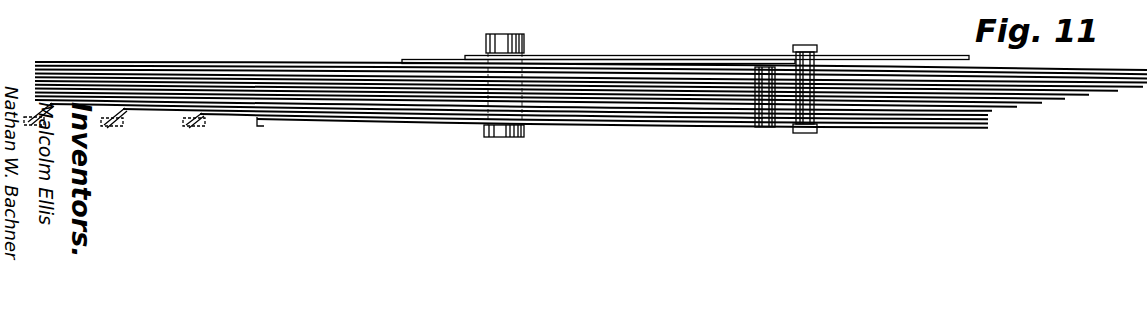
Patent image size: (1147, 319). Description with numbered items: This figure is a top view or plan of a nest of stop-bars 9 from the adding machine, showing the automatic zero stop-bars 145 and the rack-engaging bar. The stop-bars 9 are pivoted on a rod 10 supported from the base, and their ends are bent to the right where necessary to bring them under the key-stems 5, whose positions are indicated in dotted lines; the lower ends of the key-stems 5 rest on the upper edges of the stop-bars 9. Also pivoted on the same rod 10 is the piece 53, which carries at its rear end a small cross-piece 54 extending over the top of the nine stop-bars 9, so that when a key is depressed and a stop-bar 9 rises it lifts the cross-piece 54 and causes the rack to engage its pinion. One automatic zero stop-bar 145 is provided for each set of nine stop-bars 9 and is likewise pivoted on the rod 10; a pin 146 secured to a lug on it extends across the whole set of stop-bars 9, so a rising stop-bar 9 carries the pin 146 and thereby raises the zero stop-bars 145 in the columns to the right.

The key-stems 5 is at (122, 124).
The stop-bars 9 is at (641, 112).
The pivot-rod 10 is at (489, 137).
The piece 53 is at (411, 59).
The cross-piece 54 is at (757, 127).
The automatic zero stop-bar 145 is at (868, 56).
The pin 146 is at (822, 101).